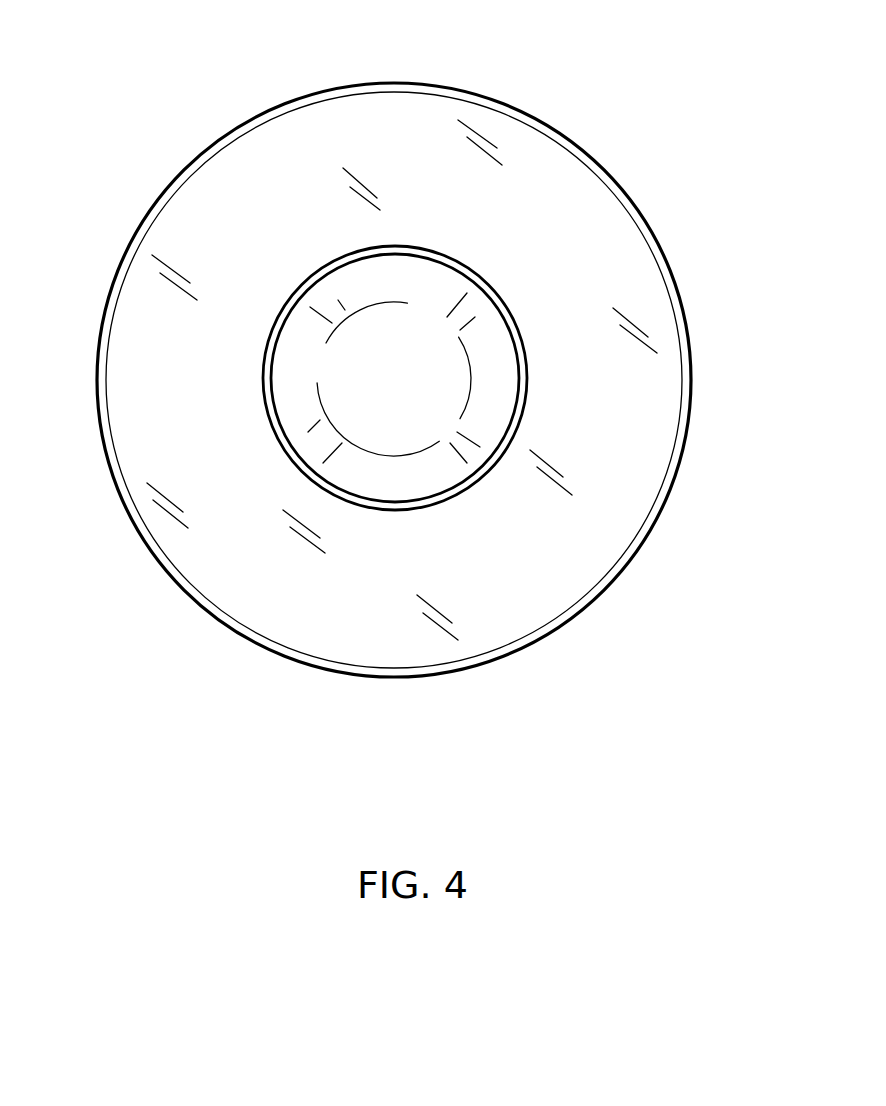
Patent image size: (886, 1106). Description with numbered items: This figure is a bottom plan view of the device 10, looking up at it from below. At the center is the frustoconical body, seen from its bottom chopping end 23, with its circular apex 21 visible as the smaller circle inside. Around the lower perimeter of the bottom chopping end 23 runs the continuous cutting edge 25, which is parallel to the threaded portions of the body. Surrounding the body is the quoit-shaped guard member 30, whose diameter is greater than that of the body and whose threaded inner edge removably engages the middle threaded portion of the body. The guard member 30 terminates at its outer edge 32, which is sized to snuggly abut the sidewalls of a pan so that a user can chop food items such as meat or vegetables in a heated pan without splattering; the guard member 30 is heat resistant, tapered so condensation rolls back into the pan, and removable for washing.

The device 10 is at (94, 110).
The circular apex 21 is at (446, 342).
The bottom chopping end 23 is at (522, 343).
The continuous cutting edge 25 is at (522, 382).
The guard member 30 is at (600, 467).
The outer edge 32 is at (692, 383).